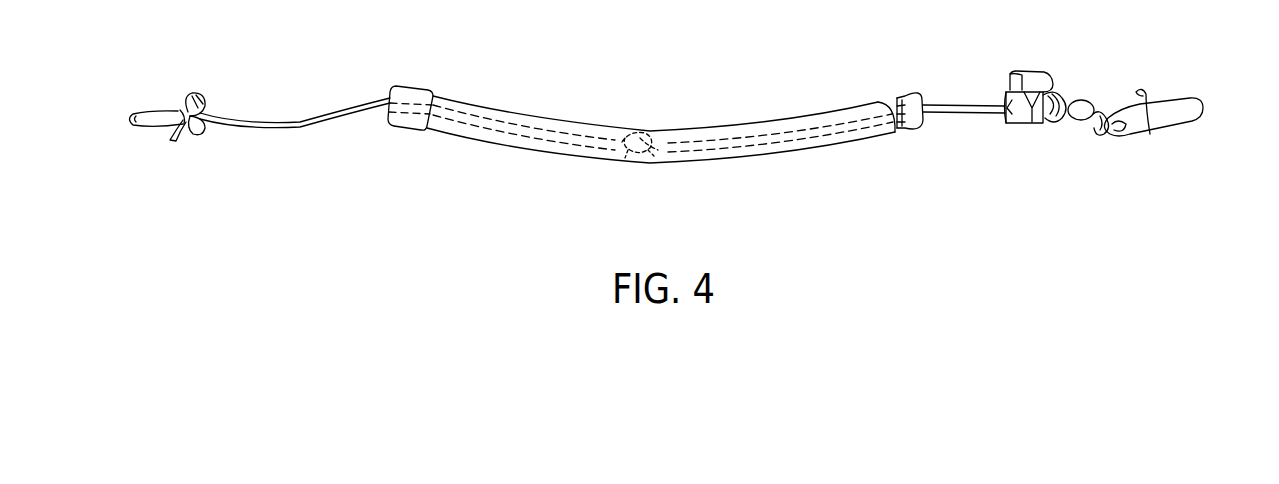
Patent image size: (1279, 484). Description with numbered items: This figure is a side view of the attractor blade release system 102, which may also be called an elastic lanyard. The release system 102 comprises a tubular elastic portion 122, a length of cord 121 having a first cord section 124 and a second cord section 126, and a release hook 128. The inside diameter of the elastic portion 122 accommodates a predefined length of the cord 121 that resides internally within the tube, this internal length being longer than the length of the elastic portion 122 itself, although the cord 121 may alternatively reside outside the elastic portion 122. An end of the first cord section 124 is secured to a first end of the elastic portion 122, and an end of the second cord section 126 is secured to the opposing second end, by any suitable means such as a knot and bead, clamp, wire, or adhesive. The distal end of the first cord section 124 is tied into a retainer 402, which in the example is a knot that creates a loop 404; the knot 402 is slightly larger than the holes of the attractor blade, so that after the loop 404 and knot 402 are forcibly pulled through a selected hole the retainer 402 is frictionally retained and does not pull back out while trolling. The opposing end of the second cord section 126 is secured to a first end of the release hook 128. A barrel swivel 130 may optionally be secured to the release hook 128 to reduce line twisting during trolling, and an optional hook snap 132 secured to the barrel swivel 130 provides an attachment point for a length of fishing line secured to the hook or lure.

The attractor blade release system 102 is at (628, 62).
The cord 121 is at (793, 138).
The elastic portion 122 is at (543, 152).
The first cord section 124 is at (280, 132).
The second cord section 126 is at (966, 114).
The release hook 128 is at (1019, 74).
The barrel swivel 130 is at (1083, 100).
The hook snap 132 is at (1183, 96).
The retainer 402 is at (188, 92).
The loop 404 is at (138, 140).